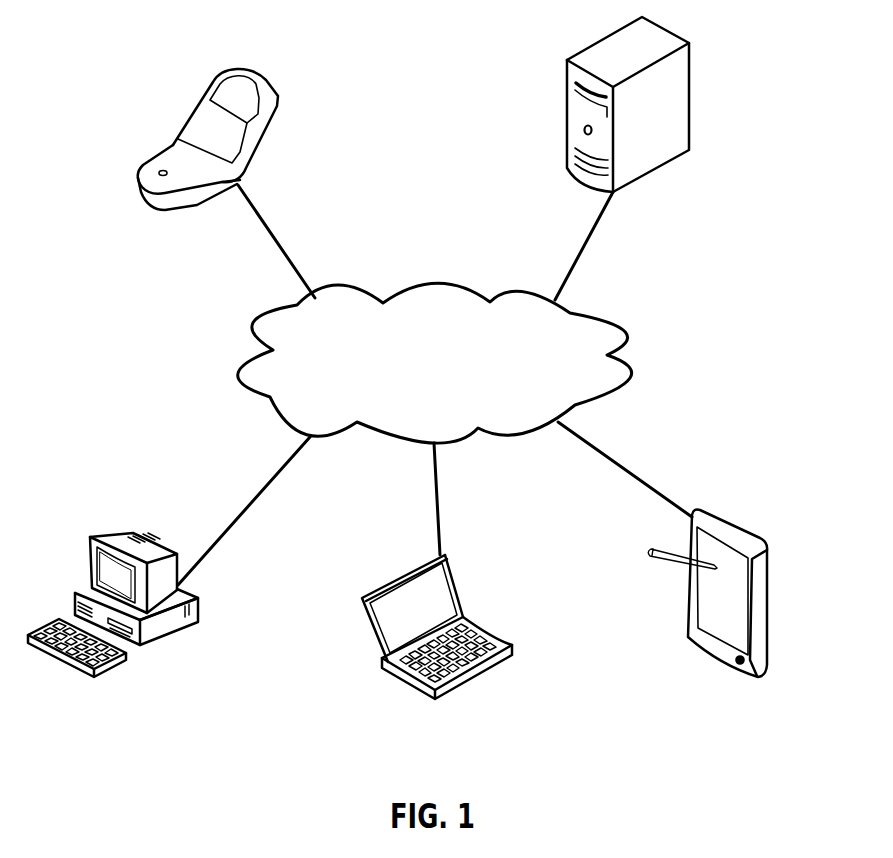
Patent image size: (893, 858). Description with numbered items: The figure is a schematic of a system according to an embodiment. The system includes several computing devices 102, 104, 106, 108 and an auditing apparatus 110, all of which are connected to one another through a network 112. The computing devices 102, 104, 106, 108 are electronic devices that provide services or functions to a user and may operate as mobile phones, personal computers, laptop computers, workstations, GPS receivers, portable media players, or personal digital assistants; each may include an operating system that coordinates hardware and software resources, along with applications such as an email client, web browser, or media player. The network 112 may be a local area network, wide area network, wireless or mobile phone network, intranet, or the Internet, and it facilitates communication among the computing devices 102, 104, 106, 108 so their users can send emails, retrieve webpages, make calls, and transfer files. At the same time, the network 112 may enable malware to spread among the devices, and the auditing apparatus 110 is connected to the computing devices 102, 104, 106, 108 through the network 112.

The computing device 102 is at (153, 139).
The computing device 104 is at (707, 621).
The computing device 106 is at (434, 656).
The computing device 108 is at (125, 632).
The auditing apparatus 110 is at (682, 104).
The network 112 is at (435, 363).